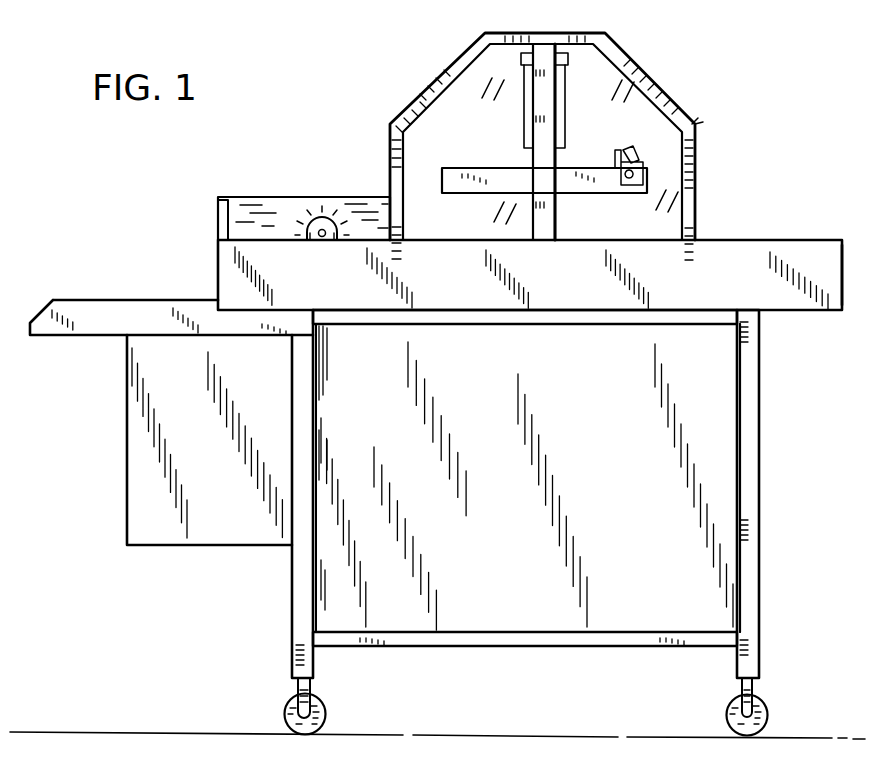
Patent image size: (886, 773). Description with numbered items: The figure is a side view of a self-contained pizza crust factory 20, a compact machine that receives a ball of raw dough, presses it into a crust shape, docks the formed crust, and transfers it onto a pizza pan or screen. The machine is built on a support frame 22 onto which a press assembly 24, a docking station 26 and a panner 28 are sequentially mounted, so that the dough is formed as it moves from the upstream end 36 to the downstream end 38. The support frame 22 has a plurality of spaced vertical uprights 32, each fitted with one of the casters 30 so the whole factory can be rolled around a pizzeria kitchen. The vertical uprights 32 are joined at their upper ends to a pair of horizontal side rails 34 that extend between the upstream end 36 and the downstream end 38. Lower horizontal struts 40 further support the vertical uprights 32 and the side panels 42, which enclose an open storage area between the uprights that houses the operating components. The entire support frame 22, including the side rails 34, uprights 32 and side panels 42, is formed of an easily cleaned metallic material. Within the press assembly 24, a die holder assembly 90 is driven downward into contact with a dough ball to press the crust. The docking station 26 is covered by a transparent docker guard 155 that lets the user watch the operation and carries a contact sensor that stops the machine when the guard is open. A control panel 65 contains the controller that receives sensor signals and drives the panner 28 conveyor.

The self-contained pizza crust factory 20 is at (724, 164).
The support frame 22 is at (772, 537).
The press assembly 24 is at (634, 120).
The docking station 26 is at (326, 186).
The panner 28 is at (175, 287).
The casters 30 is at (323, 706).
The vertical uprights 32 is at (296, 560).
The horizontal side rails 34 is at (788, 298).
The upstream end 36 is at (844, 262).
The downstream end 38 is at (217, 257).
The lower horizontal struts 40 is at (545, 646).
The side panels 42 is at (725, 602).
The control panel 65 is at (141, 523).
The die holder assembly 90 is at (473, 168).
The docker guard 155 is at (258, 197).